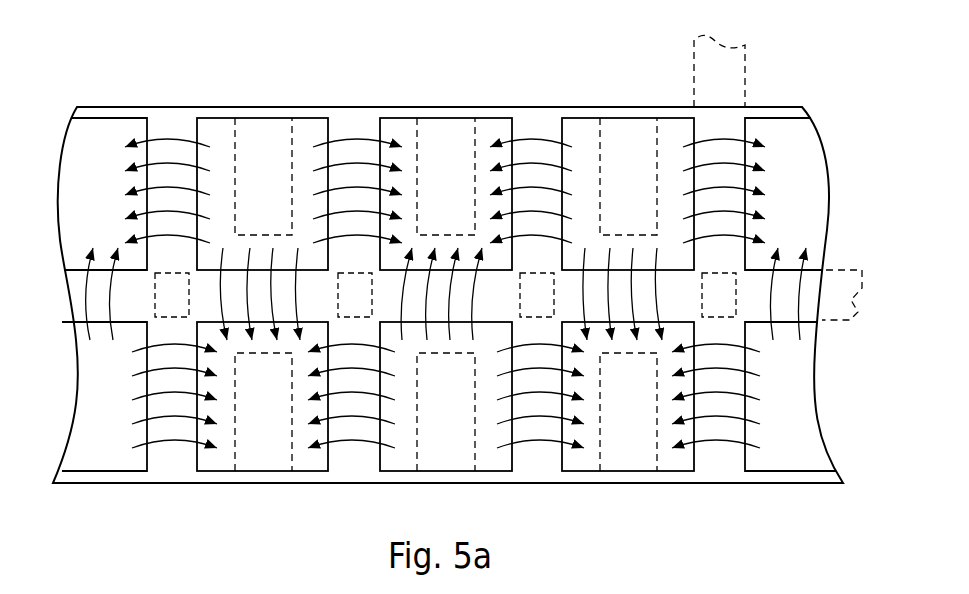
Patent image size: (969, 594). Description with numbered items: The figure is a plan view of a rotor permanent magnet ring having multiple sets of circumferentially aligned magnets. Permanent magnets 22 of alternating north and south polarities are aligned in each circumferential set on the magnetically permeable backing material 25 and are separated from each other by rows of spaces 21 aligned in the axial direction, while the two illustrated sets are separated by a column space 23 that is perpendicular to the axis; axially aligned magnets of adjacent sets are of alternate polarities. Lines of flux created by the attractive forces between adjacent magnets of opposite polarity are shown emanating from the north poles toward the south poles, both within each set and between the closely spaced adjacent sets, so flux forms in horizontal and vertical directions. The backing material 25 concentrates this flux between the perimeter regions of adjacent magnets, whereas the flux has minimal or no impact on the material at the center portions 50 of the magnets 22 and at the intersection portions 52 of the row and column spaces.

The row space 21 is at (738, 82).
The permanent magnet 22 is at (312, 132).
The column space 23 is at (848, 304).
The magnetically permeable backing material 25 is at (168, 118).
The center portion 50 is at (633, 165).
The intersection portion 52 is at (348, 296).